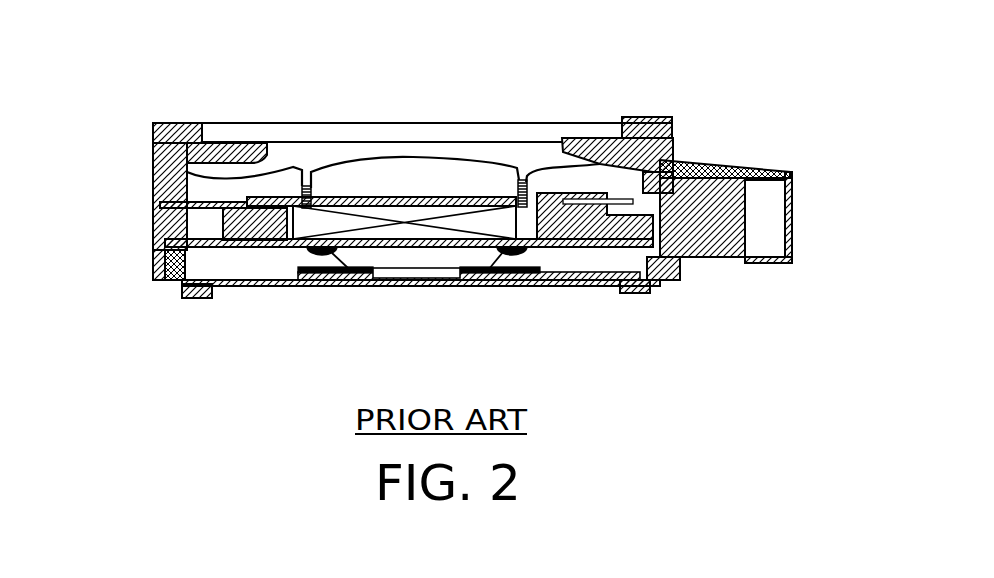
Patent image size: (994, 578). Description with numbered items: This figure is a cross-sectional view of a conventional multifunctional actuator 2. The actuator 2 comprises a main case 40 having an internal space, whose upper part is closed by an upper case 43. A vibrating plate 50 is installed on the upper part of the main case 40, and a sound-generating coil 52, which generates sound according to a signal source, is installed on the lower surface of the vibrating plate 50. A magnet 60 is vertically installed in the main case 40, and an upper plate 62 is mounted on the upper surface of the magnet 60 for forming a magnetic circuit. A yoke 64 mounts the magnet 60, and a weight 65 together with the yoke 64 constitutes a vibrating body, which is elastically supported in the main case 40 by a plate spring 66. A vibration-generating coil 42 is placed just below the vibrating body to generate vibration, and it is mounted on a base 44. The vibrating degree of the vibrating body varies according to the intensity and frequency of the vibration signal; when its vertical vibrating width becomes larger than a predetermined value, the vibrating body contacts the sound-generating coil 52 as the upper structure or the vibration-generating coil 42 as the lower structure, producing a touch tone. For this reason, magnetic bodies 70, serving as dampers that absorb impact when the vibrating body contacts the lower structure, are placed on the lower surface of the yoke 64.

The actuator 2 is at (734, 136).
The main case 40 is at (153, 185).
The vibration-generating coil 42 is at (332, 282).
The upper case 43 is at (175, 125).
The base 44 is at (253, 286).
The vibrating plate 50 is at (432, 217).
The sound-generating coil 52 is at (548, 168).
The magnet 60 is at (396, 160).
The upper plate 62 is at (307, 186).
The yoke 64 is at (446, 197).
The weight 65 is at (240, 152).
The plate spring 66 is at (182, 236).
The magnetic bodies 70 is at (455, 340).